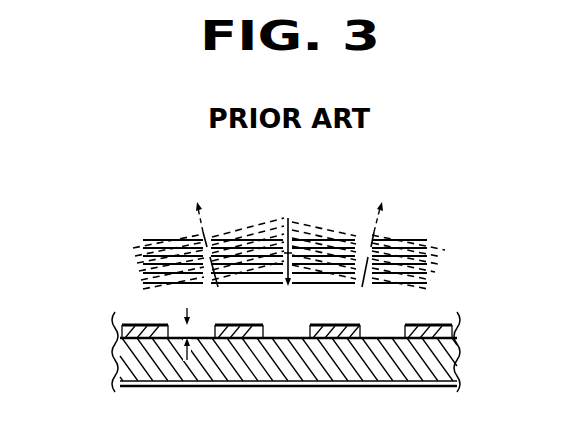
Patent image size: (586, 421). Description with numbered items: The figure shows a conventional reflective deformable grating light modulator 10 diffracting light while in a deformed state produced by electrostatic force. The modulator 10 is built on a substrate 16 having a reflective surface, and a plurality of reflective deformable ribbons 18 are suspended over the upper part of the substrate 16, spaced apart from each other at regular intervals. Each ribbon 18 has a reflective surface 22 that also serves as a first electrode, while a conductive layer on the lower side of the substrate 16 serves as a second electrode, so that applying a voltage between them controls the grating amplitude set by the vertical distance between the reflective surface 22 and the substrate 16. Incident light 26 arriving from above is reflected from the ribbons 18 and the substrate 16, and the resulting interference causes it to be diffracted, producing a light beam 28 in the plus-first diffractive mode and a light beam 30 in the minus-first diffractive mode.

The reflective deformable grating light modulator 10 is at (282, 340).
The substrate 16 is at (458, 347).
The reflective deformable ribbons 18 is at (315, 313).
The reflective surface 22 is at (442, 322).
The incident light 26 is at (460, 243).
The light beam diffracted in +1 diffractive mode 28 is at (202, 223).
The light beam diffracted in -1 diffractive mode 30 is at (382, 215).